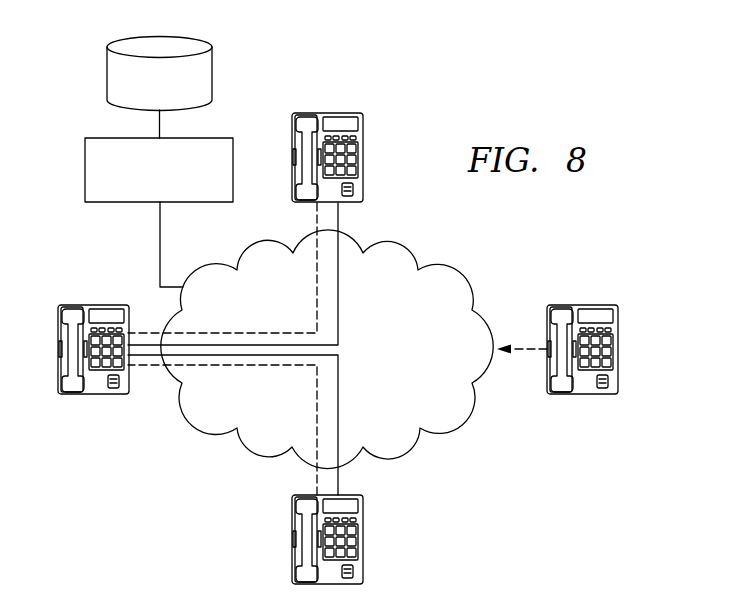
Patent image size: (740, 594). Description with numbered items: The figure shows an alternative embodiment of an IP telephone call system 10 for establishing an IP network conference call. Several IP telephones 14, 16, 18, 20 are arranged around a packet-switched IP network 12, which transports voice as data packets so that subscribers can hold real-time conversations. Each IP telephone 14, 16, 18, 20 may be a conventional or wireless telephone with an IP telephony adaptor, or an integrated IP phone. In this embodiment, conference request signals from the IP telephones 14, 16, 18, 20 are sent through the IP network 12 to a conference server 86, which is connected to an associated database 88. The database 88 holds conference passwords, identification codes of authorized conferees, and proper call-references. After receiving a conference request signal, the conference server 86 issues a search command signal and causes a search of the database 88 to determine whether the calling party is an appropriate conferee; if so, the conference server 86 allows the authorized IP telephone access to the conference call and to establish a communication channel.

The IP telephone call system 10 is at (162, 478).
The IP network 12 is at (462, 425).
The IP telephone 14 is at (93, 305).
The IP telephone 16 is at (292, 538).
The IP telephone 18 is at (324, 113).
The IP telephone 20 is at (618, 349).
The conference server 86 is at (85, 170).
The database 88 is at (107, 73).